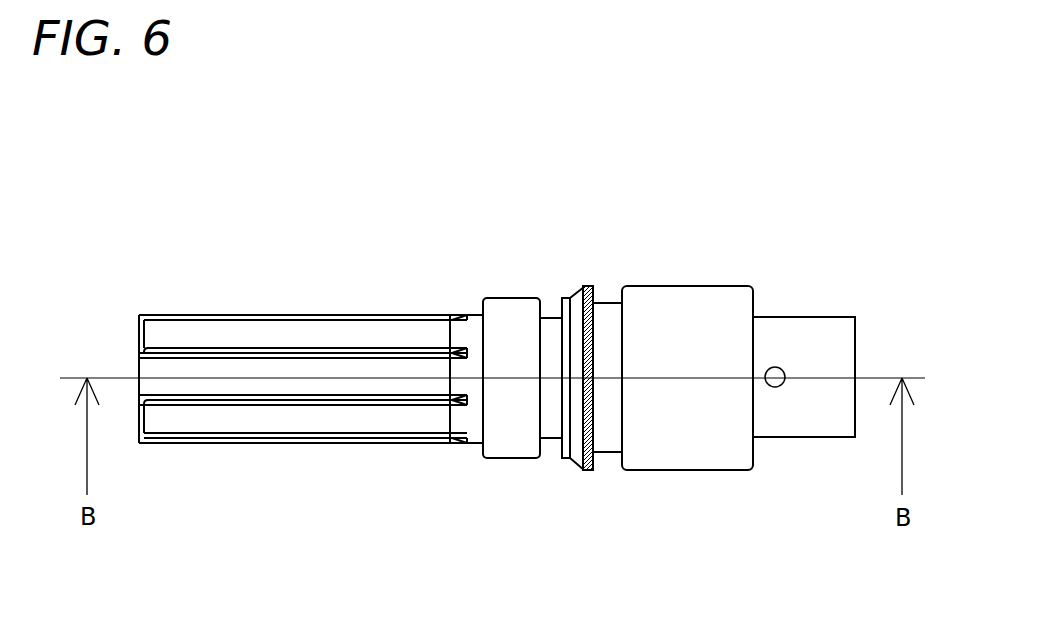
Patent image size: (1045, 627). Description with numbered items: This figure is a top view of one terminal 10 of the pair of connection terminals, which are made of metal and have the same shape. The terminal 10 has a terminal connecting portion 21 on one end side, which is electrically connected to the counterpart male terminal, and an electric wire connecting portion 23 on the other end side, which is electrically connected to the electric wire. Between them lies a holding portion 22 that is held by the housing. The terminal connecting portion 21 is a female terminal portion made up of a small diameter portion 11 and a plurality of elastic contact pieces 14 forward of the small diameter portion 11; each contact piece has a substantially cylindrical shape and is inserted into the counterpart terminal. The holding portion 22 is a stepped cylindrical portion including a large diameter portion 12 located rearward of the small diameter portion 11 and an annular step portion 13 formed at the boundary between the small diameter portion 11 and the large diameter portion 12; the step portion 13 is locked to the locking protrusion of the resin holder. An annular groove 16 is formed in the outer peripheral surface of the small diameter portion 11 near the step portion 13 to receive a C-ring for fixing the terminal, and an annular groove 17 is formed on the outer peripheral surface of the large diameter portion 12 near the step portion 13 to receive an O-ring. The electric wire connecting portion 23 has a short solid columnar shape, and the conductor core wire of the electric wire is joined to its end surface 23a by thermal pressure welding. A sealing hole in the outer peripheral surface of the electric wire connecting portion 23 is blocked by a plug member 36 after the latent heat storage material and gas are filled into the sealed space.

The terminal 10 is at (202, 236).
The terminal connecting portion 21 is at (538, 273).
The holding portion 22 is at (748, 273).
The electric wire connecting portion 23 is at (848, 273).
The end surface 23a is at (855, 360).
The elastic contact pieces 14 is at (307, 420).
The small diameter portion 11 is at (505, 445).
The annular groove 16 is at (558, 443).
The step portion 13 is at (580, 470).
The annular groove 17 is at (618, 460).
The large diameter portion 12 is at (694, 460).
The plug member 36 is at (776, 388).